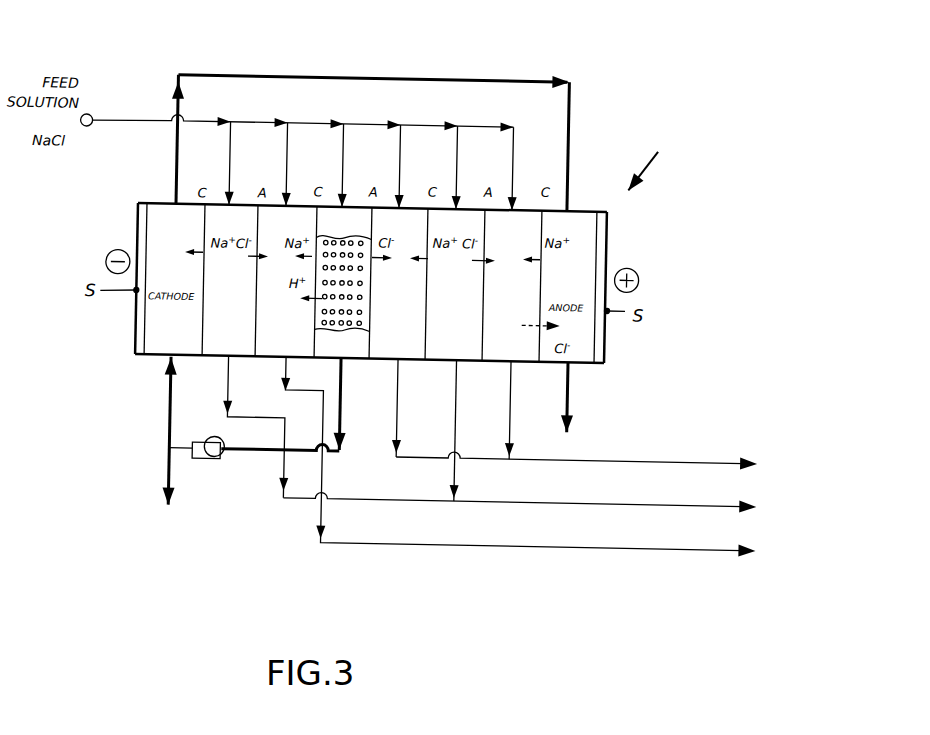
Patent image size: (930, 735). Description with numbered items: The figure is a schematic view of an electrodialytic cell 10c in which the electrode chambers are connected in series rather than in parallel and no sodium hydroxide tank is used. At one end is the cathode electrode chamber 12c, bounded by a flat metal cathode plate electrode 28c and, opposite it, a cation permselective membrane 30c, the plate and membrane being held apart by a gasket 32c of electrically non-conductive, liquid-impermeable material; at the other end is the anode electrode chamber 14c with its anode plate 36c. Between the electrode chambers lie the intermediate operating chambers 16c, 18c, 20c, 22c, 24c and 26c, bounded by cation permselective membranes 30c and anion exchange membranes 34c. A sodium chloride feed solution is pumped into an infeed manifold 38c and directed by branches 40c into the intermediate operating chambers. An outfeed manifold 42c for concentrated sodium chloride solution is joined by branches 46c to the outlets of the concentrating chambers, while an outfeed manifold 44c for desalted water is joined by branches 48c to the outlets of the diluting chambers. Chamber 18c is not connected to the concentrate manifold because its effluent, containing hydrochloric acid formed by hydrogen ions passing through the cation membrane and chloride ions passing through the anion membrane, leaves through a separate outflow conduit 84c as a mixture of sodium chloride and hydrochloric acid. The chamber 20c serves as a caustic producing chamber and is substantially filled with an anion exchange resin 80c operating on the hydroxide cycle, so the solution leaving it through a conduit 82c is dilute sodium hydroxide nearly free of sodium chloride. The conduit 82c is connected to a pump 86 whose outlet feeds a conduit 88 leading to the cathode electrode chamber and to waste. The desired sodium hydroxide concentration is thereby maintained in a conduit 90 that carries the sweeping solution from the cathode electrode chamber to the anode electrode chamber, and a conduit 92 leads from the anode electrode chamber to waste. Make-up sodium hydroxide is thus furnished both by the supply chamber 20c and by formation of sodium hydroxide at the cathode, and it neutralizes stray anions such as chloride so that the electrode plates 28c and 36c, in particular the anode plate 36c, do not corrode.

The electrodialytic cell 10c is at (648, 156).
The cathode electrode chamber 12c is at (153, 356).
The anode electrode chamber 14c is at (584, 204).
The intermediate operating chamber 16c is at (241, 201).
The intermediate operating chamber 18c is at (300, 202).
The caustic producing chamber 20c is at (353, 201).
The intermediate operating chamber 22c is at (410, 200).
The intermediate operating chamber 24c is at (467, 199).
The intermediate operating chamber 26c is at (523, 198).
The cathode plate electrode 28c is at (137, 213).
The cation permselective membrane 30c is at (204, 313).
The gasket 32c is at (413, 354).
The anion exchange membrane 34c is at (259, 298).
The anode plate electrode 36c is at (609, 231).
The infeed manifold 38c is at (138, 114).
The branches 40c is at (227, 155).
The outfeed manifold for concentrated sodium chloride solution 42c is at (564, 432).
The outfeed manifold for desalted water 44c is at (495, 493).
The branches 46c is at (403, 418).
The branches 48c is at (231, 380).
The anion exchange resin 80c is at (357, 288).
The conduit 82c is at (345, 395).
The outflow conduit 84c is at (486, 541).
The pump 86 is at (220, 461).
The conduit 88 is at (174, 447).
The conduit 90 is at (475, 68).
The conduit 92 is at (573, 370).